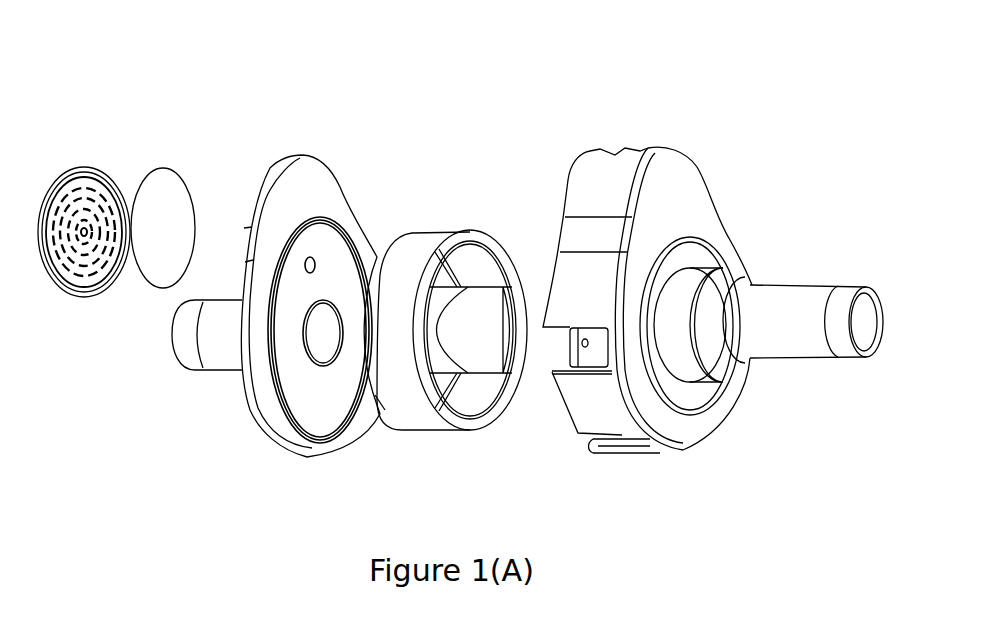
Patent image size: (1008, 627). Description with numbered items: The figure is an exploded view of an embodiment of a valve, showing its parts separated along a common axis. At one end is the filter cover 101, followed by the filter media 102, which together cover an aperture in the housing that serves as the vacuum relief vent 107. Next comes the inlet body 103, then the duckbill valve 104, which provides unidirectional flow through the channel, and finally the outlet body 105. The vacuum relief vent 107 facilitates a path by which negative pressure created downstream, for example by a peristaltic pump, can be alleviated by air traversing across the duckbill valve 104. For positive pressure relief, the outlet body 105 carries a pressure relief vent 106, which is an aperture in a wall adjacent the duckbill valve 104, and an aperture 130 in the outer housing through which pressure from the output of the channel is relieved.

The filter cover 101 is at (86, 167).
The filter media 102 is at (166, 168).
The inlet body 103 is at (316, 153).
The duckbill valve 104 is at (435, 228).
The outlet body 105 is at (652, 152).
The pressure relief vent 106 is at (589, 348).
The vacuum relief vent 107 is at (309, 272).
The aperture 130 is at (568, 372).